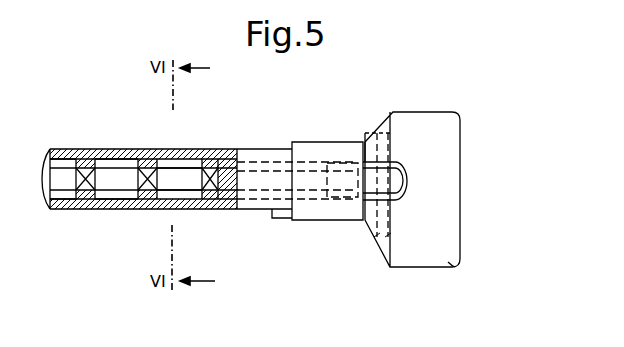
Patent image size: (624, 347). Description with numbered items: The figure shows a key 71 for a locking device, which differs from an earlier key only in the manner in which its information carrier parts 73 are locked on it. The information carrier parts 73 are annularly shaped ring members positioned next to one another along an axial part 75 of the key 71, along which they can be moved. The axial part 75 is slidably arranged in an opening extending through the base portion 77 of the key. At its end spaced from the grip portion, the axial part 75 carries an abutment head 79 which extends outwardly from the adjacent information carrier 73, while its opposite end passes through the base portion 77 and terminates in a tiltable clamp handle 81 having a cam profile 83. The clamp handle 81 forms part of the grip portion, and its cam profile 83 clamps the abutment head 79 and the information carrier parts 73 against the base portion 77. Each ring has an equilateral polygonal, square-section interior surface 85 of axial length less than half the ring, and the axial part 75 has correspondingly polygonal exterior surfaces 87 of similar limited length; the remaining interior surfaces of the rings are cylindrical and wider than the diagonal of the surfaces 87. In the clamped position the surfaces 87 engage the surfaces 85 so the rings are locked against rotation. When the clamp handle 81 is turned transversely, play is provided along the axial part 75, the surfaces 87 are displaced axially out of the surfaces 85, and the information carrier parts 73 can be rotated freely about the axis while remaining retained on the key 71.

The key 71 is at (450, 98).
The information carrier parts 73 is at (127, 203).
The axial part 75 is at (185, 178).
The base portion 77 is at (258, 210).
The abutment head 79 is at (46, 176).
The clamp handle 81 is at (455, 268).
The cam profile 83 is at (370, 140).
The interior surface 85 is at (88, 167).
The exterior surfaces 87 is at (75, 178).